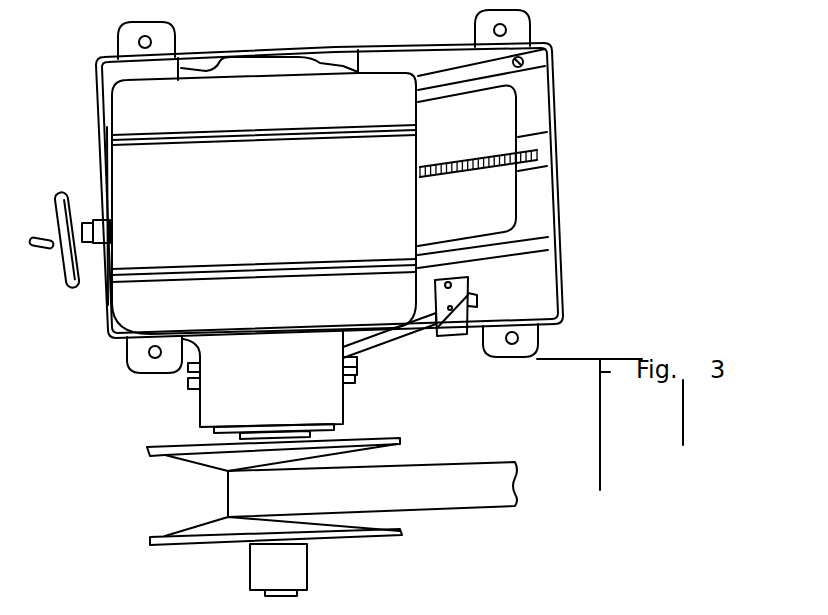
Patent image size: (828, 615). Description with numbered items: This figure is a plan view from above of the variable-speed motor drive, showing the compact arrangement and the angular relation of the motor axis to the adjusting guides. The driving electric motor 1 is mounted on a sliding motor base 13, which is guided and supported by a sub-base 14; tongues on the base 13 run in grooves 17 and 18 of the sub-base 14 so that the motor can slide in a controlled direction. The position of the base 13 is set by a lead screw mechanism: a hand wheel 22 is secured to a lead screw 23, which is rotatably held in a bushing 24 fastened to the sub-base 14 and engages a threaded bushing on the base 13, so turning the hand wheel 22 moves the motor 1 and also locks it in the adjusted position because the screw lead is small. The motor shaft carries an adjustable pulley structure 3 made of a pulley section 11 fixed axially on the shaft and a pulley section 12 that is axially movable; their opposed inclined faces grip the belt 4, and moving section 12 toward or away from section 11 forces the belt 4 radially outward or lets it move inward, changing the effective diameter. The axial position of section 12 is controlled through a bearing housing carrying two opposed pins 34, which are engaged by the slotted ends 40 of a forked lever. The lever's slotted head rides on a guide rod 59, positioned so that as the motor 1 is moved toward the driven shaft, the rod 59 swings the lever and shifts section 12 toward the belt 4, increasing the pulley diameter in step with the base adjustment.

The driving electric motor 1 is at (283, 197).
The adjustable pulley structure 3 is at (172, 500).
The belt 4 is at (490, 503).
The pulley section 11 is at (162, 537).
The pulley section 12 is at (160, 456).
The sliding motor base 13 is at (122, 99).
The sub-base 14 is at (355, 57).
The groove 17 is at (443, 84).
The groove 18 is at (456, 249).
The hand wheel 22 is at (60, 279).
The lead screw 23 is at (426, 180).
The bushing 24 is at (106, 224).
The radially projecting pins 34 is at (188, 381).
The slotted ends 40 is at (193, 390).
The guide rod 59 is at (389, 340).